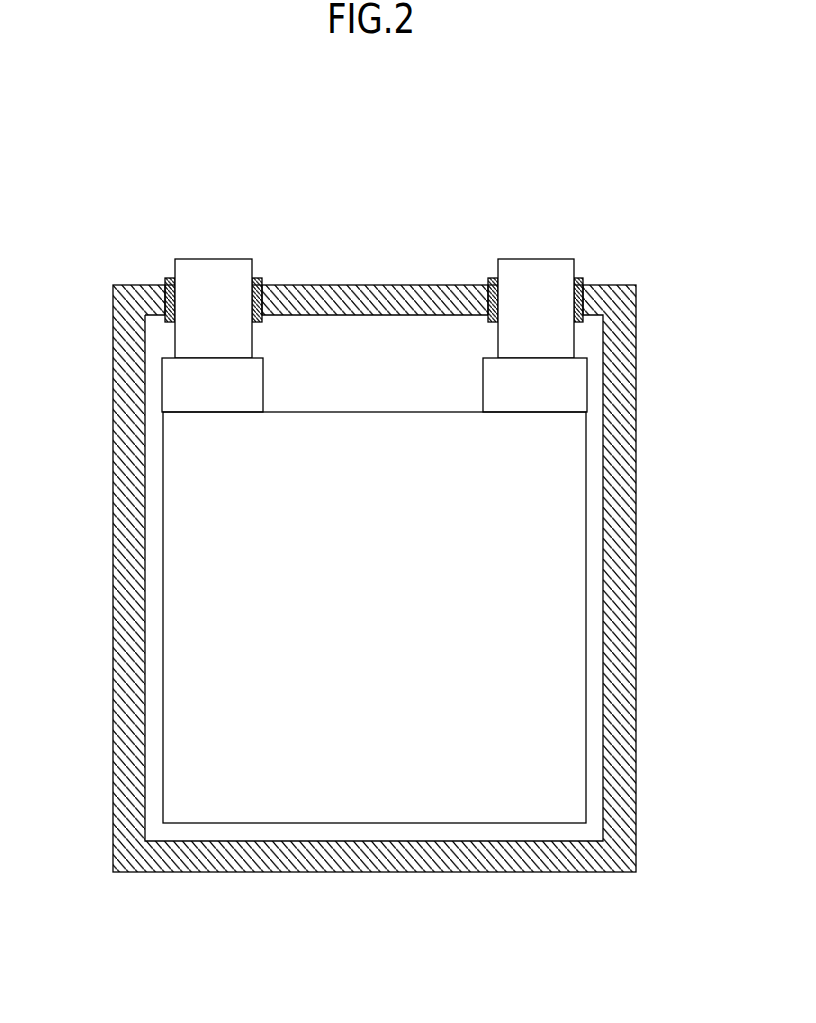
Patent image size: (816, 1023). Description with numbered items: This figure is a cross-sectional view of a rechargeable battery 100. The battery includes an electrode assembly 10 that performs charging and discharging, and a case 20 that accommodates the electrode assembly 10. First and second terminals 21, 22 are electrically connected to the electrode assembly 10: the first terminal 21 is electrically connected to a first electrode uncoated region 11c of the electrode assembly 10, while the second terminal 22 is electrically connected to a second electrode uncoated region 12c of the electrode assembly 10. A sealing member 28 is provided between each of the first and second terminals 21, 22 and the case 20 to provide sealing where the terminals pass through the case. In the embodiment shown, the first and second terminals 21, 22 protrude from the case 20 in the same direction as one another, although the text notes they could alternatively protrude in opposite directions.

The rechargeable battery 100 is at (392, 122).
The electrode assembly 10 is at (394, 407).
The first electrode uncoated region 11c is at (174, 395).
The second electrode uncoated region 12c is at (568, 387).
The case 20 is at (620, 565).
The first terminal 21 is at (212, 273).
The second terminal 22 is at (537, 273).
The sealing member 28 is at (255, 277).